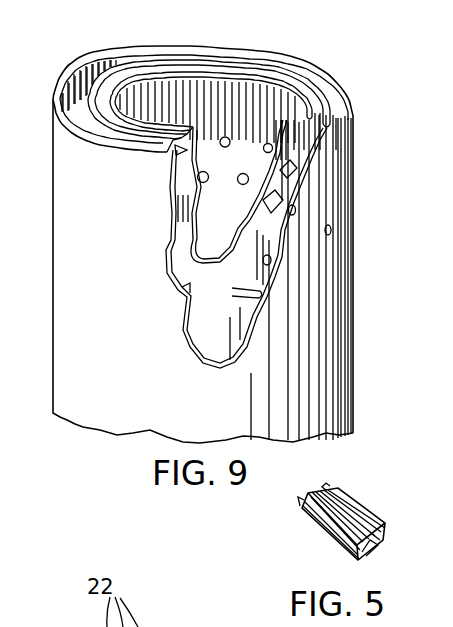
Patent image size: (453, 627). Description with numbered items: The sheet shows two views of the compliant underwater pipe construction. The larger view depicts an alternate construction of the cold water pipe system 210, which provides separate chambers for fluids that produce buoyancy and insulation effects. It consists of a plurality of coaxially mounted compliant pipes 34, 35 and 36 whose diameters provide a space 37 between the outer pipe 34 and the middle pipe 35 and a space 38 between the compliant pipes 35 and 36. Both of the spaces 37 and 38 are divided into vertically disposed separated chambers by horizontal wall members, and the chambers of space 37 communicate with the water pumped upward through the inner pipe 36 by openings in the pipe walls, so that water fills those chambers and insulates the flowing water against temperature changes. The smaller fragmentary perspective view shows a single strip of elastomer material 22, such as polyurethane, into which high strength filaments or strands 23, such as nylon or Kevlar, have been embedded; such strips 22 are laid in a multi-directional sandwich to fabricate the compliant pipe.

In FIG. 9, the compliant pipe 34 is at (352, 218).
In FIG. 9, the compliant pipe 35 is at (323, 100).
In FIG. 9, the compliant pipe 36 is at (266, 80).
In FIG. 9, the space 37 is at (80, 70).
In FIG. 9, the space 38 is at (308, 97).
In FIG. 9, the cold water pipe system 210 is at (355, 302).
In FIG. 5, the strip of elastomer material 22 is at (382, 521).
In FIG. 5, the filament 23 is at (352, 514).